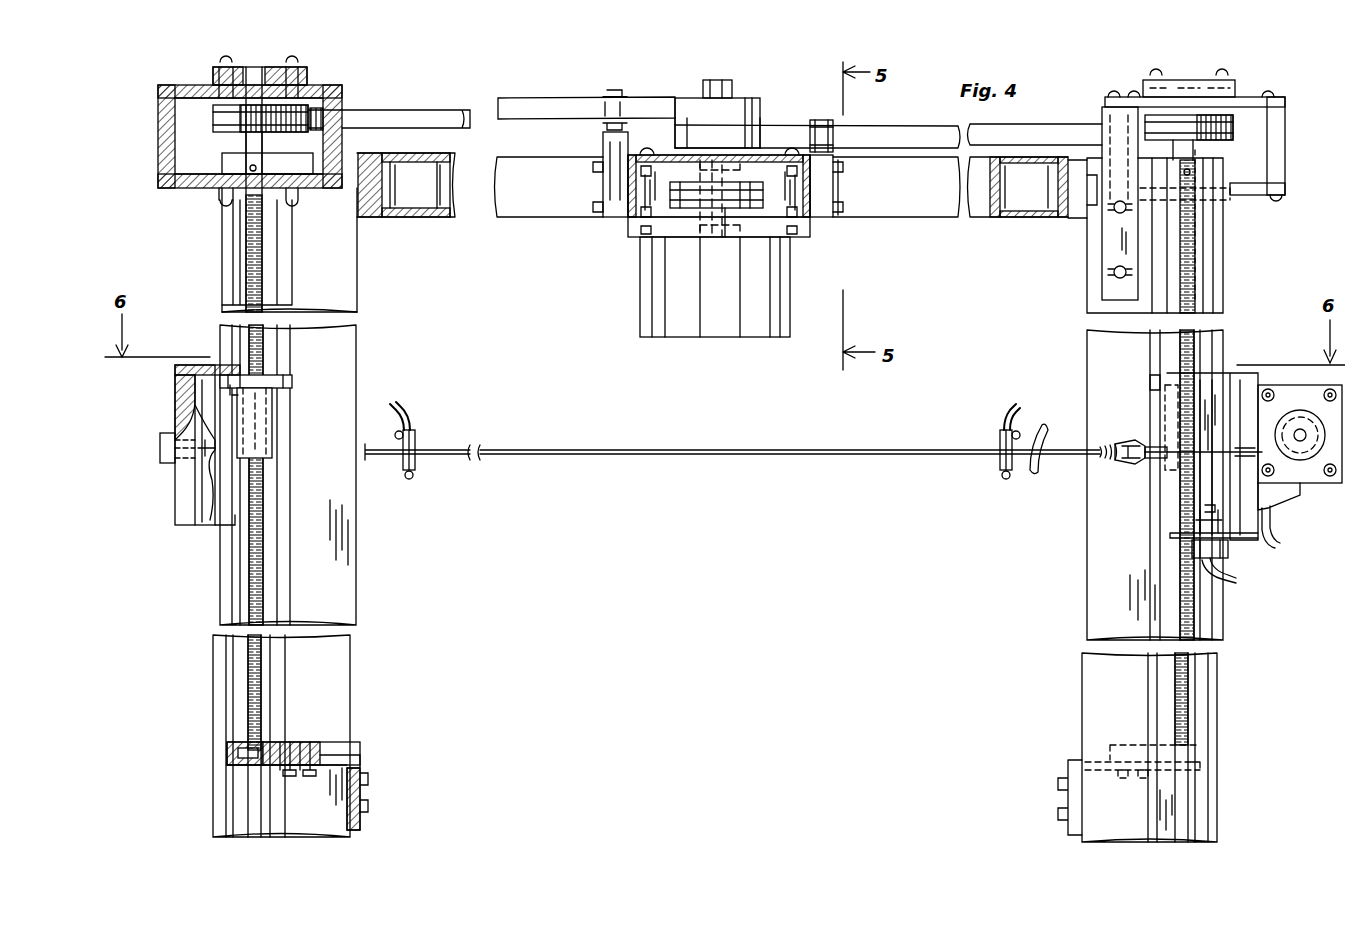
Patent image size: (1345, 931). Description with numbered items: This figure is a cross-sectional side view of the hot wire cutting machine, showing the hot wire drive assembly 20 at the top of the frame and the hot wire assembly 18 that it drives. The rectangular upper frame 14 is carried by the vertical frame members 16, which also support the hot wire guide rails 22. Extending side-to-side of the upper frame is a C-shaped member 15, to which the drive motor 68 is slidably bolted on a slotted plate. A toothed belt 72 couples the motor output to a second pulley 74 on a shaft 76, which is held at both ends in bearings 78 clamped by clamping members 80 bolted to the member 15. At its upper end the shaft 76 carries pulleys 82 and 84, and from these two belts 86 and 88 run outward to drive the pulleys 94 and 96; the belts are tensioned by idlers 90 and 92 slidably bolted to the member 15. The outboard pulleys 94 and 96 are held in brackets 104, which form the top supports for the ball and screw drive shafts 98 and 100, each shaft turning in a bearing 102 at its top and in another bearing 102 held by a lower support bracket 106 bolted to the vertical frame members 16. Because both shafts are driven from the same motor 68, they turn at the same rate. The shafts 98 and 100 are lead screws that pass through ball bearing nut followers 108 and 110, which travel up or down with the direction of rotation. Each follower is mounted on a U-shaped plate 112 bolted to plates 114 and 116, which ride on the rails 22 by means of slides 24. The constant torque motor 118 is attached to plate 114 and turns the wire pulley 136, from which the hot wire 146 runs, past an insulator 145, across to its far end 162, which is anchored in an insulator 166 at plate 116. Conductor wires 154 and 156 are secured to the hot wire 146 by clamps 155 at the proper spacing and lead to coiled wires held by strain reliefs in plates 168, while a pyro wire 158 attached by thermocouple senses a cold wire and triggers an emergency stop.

The upper frame 14 is at (426, 220).
The C-shaped member 15 is at (836, 196).
The vertical frame members 16 is at (346, 340).
The hot wire assembly 18 is at (1270, 352).
The hot wire drive assembly 20 is at (656, 95).
The hot wire guide rails 22 is at (222, 272).
The slides 24 is at (228, 524).
The drive motors 68 is at (790, 262).
The toothed belt 72 is at (686, 198).
The second pulley 74 is at (692, 190).
The shaft 76 is at (730, 210).
The bearings 78 is at (758, 184).
The clamping members 80 is at (662, 158).
The pulley 82 is at (770, 122).
The pulley 84 is at (755, 97).
The belt 86 is at (936, 128).
The belt 88 is at (458, 110).
The idler 90 is at (820, 120).
The idler 92 is at (606, 98).
The pulley 94 is at (1226, 140).
The pulley 96 is at (222, 132).
The ball and screw drive shaft 98 is at (1196, 246).
The ball and screw drive shaft 100 is at (252, 232).
The bearing 102 is at (290, 82).
The brackets 104 is at (204, 92).
The support bracket 106 is at (332, 756).
The ball bearing nut follower 108 is at (1166, 412).
The ball bearing nut follower 110 is at (276, 406).
The plates 112 is at (232, 370).
The plate 114 is at (1245, 522).
The plate 116 is at (176, 500).
The constant torque motor 118 is at (1321, 502).
The wire pulley 136 is at (1306, 424).
The insulator 145 is at (1128, 462).
The hot wire 146 is at (797, 456).
The conductor wire 154 is at (1010, 414).
The clamps 155 is at (416, 440).
The conductor wire 156 is at (410, 408).
The pyro wire 158 is at (1040, 420).
The far end of the hot wire 162 is at (194, 470).
The insulator 166 is at (166, 432).
The plates 168 is at (1172, 538).